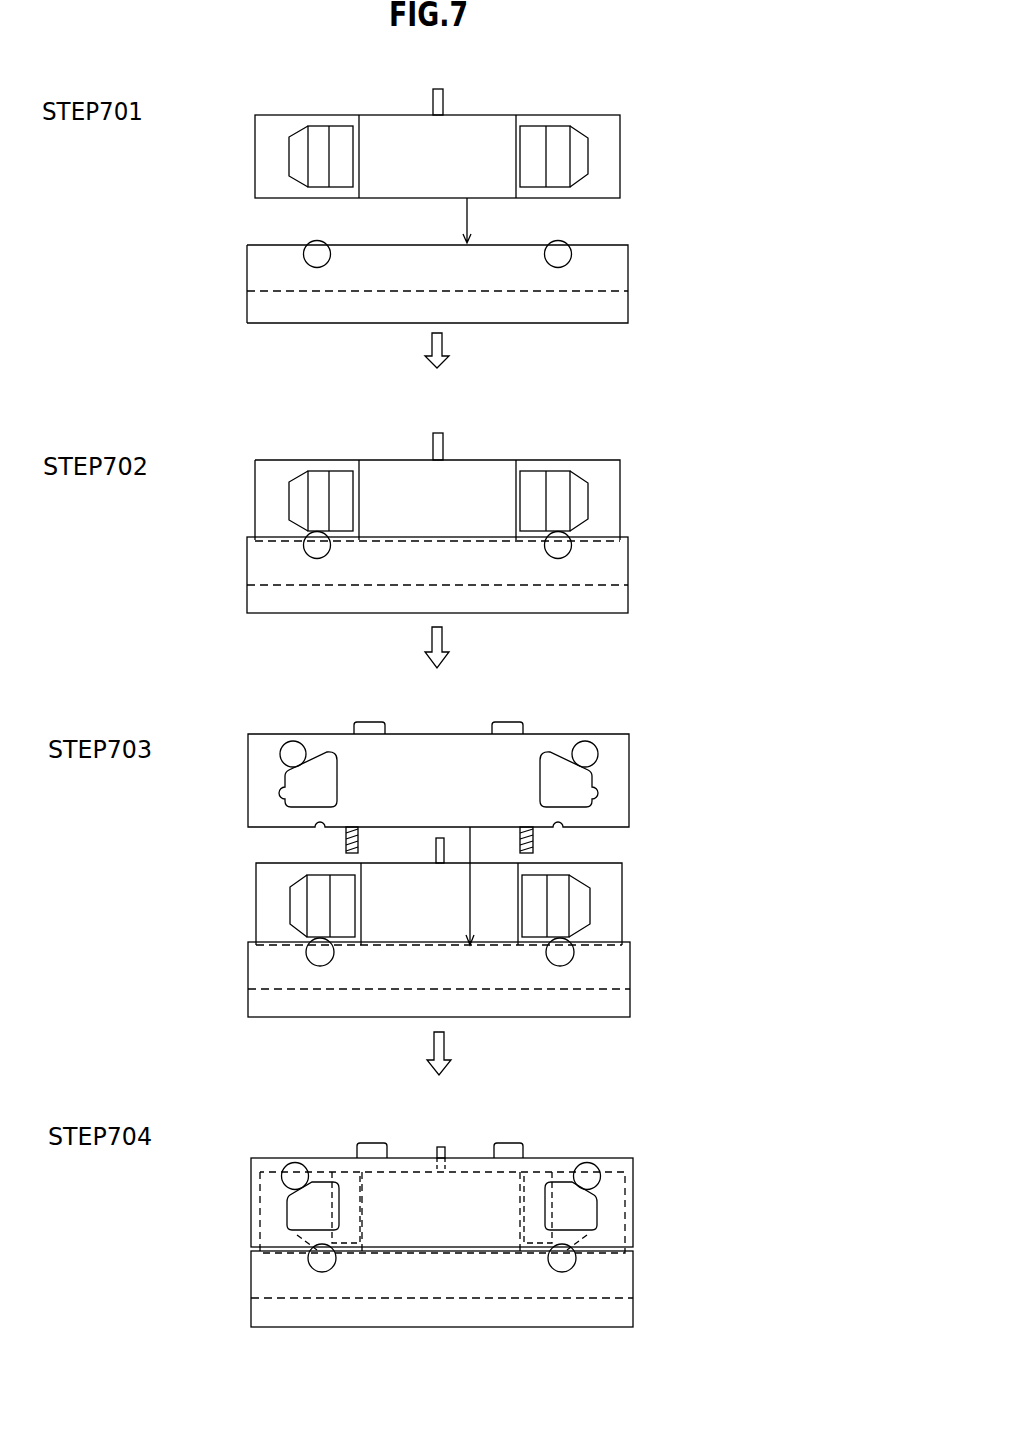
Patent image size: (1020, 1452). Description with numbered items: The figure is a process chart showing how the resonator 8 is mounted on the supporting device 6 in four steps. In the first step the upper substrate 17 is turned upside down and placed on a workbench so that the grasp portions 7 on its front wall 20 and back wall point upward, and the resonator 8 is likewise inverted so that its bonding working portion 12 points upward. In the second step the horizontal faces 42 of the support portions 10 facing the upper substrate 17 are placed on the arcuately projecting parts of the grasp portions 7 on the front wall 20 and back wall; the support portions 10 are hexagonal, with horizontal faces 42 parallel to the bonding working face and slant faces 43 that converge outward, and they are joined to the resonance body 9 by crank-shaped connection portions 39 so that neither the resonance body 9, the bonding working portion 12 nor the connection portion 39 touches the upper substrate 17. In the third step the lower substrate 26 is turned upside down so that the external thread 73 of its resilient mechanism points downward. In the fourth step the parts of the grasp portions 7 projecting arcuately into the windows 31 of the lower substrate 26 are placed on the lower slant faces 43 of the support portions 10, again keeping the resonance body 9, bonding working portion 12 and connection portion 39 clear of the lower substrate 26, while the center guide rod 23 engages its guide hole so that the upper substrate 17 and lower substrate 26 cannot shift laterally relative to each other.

The supporting device 6 is at (639, 251).
The grasp portions 7 is at (317, 264).
The resonator 8 is at (631, 113).
The resonance body 9 is at (625, 1188).
The support portions 10 is at (306, 135).
The bonding working portion 12 is at (443, 98).
The upper substrate 17 is at (623, 306).
The front wall 20 is at (247, 268).
The center guide rod 23 is at (370, 722).
The lower substrate 26 is at (629, 750).
The windows 31 is at (285, 800).
The connection portion 39 is at (342, 482).
The horizontal faces 42 is at (319, 188).
The slant faces 43 is at (300, 880).
The external thread 73 is at (355, 827).